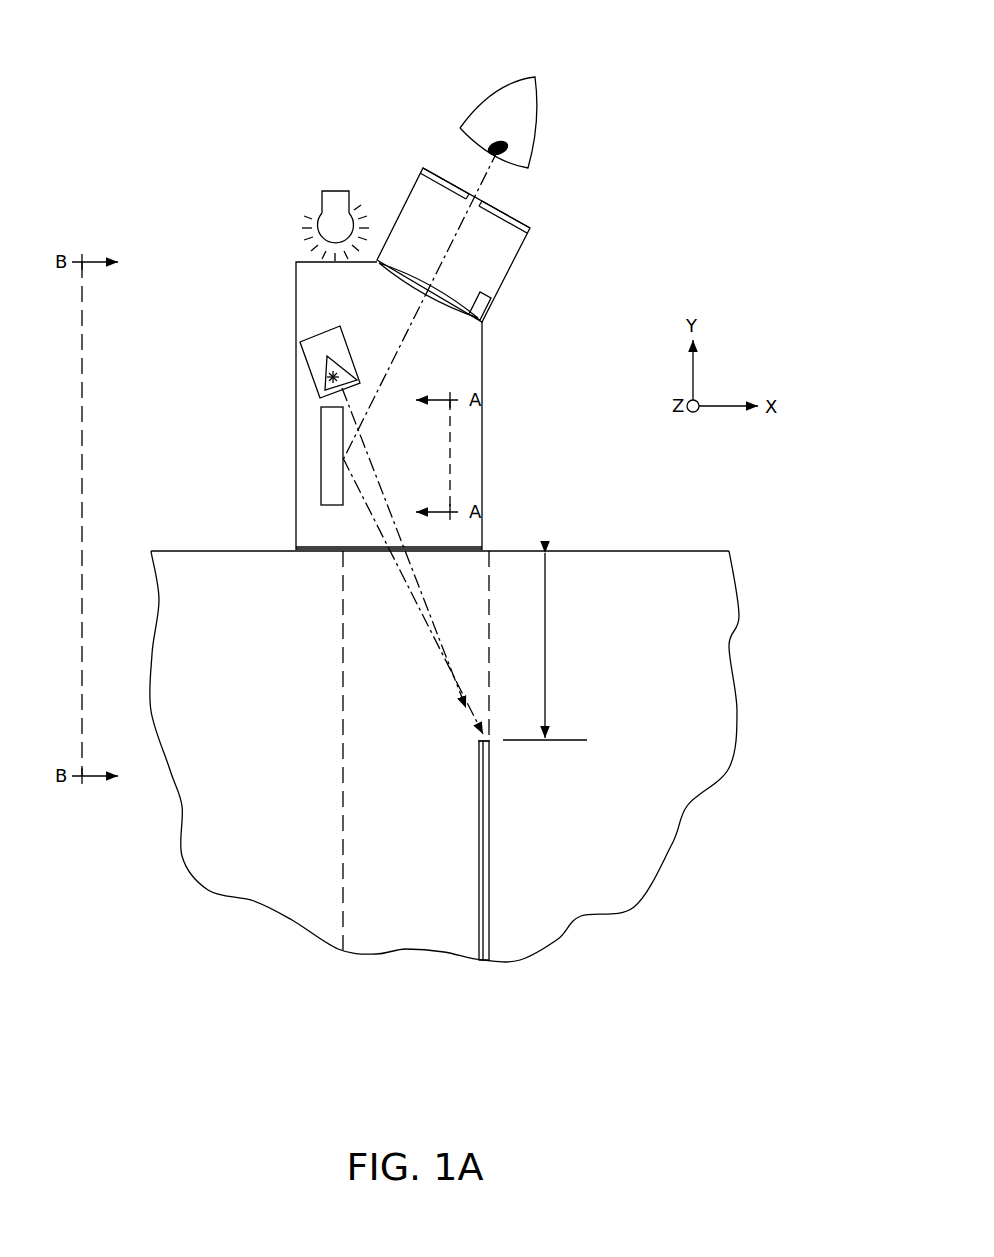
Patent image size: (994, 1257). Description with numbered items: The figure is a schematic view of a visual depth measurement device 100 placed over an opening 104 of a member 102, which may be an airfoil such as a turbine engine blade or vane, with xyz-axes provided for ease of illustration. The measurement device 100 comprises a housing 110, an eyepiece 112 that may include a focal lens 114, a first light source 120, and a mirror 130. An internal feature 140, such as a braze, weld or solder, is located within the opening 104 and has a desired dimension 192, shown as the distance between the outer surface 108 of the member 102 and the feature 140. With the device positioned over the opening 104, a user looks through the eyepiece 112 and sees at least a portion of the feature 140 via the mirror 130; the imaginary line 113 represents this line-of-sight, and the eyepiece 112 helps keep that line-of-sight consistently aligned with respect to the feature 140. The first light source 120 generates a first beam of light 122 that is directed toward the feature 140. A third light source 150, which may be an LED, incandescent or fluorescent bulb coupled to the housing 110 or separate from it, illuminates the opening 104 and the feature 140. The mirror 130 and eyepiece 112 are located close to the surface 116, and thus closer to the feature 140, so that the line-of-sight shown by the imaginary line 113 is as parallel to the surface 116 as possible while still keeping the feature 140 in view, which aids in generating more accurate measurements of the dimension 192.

The visual depth measurement device 100 is at (396, 82).
The member 102 is at (268, 680).
The opening 104 is at (437, 750).
The outer surface 108 is at (676, 550).
The housing 110 is at (296, 288).
The eyepiece 112 is at (522, 222).
The imaginary line 113 is at (410, 318).
The focal lens 114 is at (482, 291).
The surface 116 is at (325, 549).
The first light source 120 is at (313, 373).
The first beam of light 122 is at (380, 485).
The mirror 130 is at (321, 456).
The internal feature 140 is at (479, 822).
The third light source 150 is at (300, 202).
The desired dimension 192 is at (549, 649).